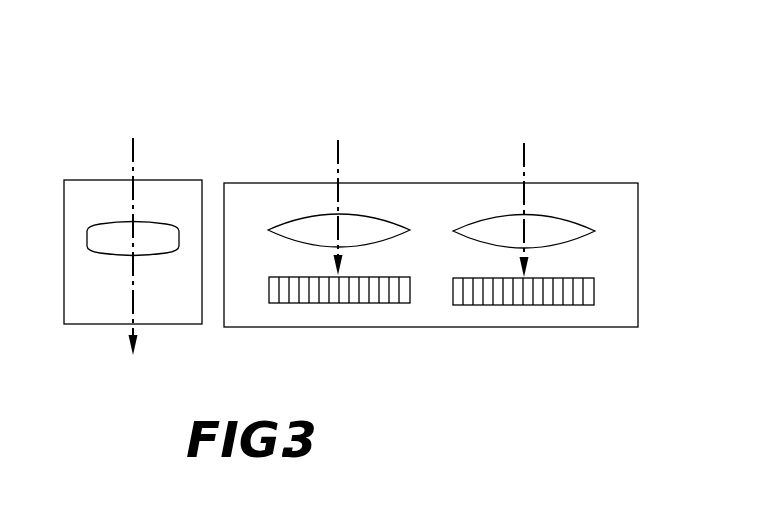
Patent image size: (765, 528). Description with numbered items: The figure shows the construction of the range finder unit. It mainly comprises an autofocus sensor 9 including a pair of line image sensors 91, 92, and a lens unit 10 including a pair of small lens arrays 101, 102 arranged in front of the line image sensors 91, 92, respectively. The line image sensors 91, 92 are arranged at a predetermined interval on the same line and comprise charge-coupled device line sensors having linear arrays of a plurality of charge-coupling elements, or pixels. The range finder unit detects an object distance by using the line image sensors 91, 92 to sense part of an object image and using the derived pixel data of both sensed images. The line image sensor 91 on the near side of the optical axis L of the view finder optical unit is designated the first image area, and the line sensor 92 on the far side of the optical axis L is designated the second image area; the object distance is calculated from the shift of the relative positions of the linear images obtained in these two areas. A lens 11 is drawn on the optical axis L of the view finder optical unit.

The optical axis L is at (132, 157).
The lens 11 is at (150, 223).
The lens unit 10 is at (431, 170).
The small lens array 101 is at (360, 214).
The small lens array 102 is at (521, 199).
The autofocus (AF) sensor 9 is at (431, 353).
The line image sensor 91 is at (363, 303).
The line image sensor 92 is at (500, 305).